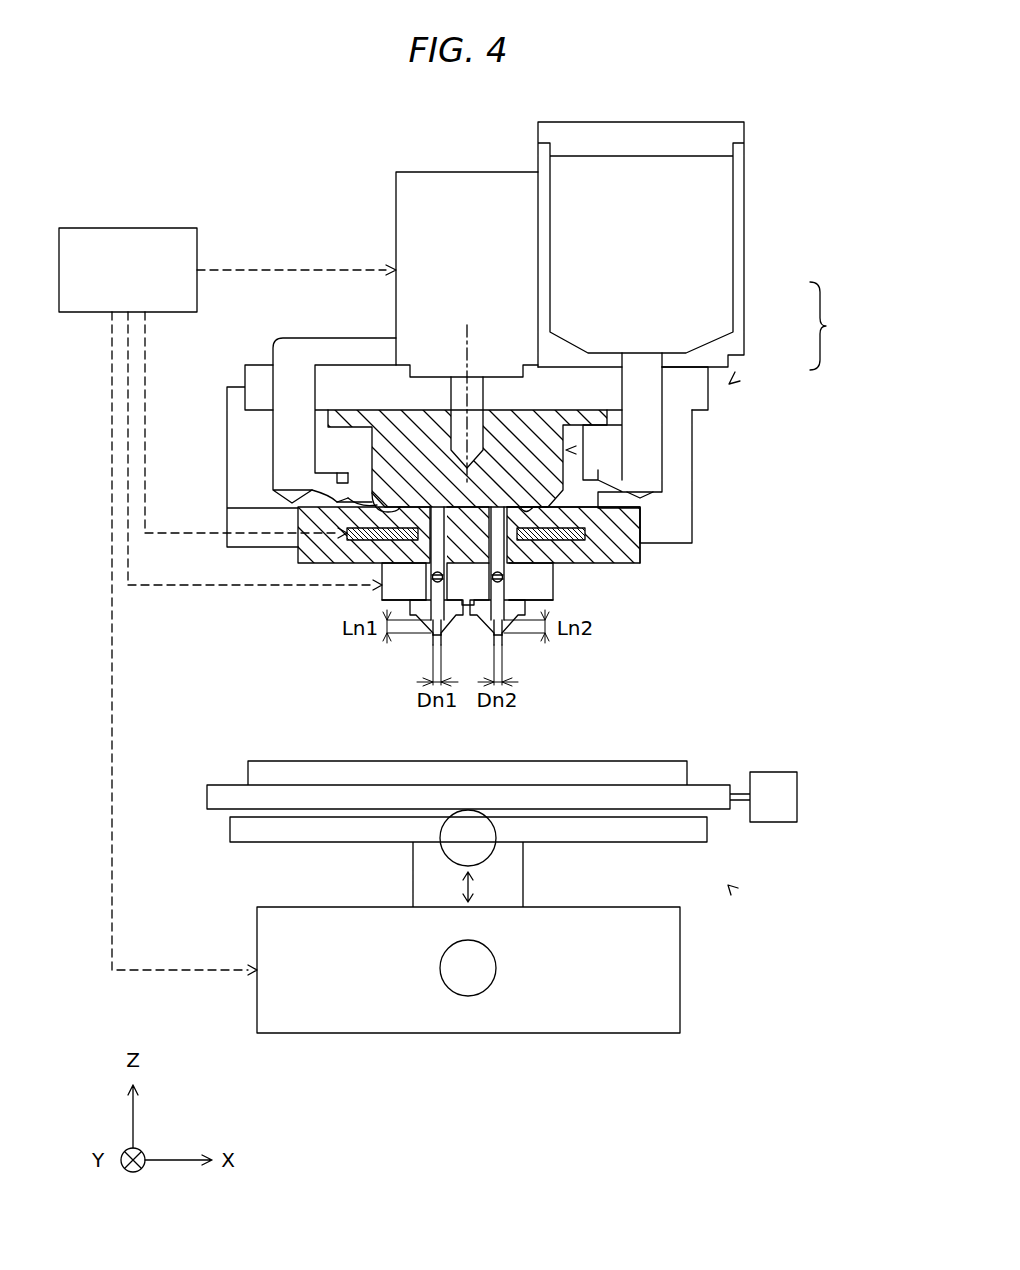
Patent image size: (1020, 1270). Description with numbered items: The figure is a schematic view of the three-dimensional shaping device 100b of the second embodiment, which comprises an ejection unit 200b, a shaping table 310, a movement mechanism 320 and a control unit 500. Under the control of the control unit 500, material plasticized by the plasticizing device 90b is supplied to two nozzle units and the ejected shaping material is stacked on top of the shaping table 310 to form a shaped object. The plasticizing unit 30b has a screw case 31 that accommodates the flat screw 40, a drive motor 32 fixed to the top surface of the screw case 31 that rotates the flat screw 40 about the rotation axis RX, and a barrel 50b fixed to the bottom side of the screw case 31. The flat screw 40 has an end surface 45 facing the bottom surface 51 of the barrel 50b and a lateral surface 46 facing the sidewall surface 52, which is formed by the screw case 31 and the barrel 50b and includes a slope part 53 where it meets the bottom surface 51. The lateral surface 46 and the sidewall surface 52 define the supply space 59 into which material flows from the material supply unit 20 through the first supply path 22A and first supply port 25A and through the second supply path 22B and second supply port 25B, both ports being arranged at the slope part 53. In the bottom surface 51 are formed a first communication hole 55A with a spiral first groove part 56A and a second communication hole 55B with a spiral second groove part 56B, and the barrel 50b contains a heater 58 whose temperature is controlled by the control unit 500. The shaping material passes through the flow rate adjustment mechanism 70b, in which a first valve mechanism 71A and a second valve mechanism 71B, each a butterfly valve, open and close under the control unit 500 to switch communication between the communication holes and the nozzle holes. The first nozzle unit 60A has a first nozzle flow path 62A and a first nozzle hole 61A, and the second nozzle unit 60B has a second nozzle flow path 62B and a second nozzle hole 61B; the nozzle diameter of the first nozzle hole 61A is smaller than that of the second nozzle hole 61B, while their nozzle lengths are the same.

The three-dimensional shaping device 100b is at (167, 138).
The ejection unit 200b is at (277, 178).
The control unit 500 is at (123, 228).
The drive motor 32 is at (396, 206).
The material supply unit 20 is at (748, 297).
The plasticizing device 90b is at (838, 326).
The plasticizing unit 30b is at (730, 383).
The screw case 31 is at (272, 344).
The first supply path 22A is at (236, 398).
The flat screw 40 is at (393, 432).
The lateral surface 46 is at (300, 440).
The sidewall surface 52 is at (340, 485).
The first supply port 25A is at (352, 478).
The end surface 45 is at (385, 515).
The barrel 50b is at (298, 545).
The bottom surface 51 is at (345, 530).
The slope part 53 is at (588, 536).
The second supply path 22B is at (642, 428).
The supply space 59 is at (568, 450).
The second supply port 25B is at (616, 494).
The first groove part 56A is at (642, 548).
The second groove part 56B is at (642, 560).
The second communication hole 55B is at (554, 580).
The flow rate adjustment mechanism 70b is at (556, 600).
The heater 58 is at (382, 580).
The first communication hole 55A is at (392, 598).
The first nozzle unit 60A is at (420, 617).
The first nozzle flow path 62A is at (431, 638).
The first nozzle hole 61A is at (436, 645).
The first valve mechanism 71A is at (431, 578).
The second nozzle unit 60B is at (516, 617).
The second nozzle flow path 62B is at (506, 638).
The second nozzle hole 61B is at (501, 645).
The second valve mechanism 71B is at (505, 578).
The shaping table 310 is at (690, 765).
The movement mechanism 320 is at (728, 885).